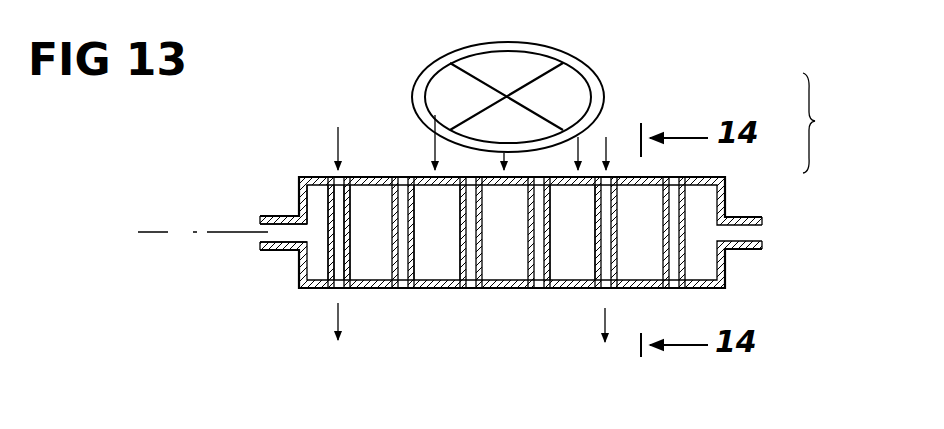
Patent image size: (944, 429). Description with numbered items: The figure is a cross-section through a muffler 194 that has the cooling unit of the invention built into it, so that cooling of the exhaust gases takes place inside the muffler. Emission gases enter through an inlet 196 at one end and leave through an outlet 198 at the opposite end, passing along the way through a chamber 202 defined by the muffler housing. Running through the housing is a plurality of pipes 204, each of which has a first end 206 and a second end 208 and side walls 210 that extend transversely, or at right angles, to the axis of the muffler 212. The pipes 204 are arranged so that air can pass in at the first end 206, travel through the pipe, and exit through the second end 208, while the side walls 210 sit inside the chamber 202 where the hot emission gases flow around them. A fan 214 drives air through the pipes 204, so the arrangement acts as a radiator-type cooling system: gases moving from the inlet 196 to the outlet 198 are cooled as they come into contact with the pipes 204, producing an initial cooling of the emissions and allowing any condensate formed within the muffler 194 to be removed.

The muffler 194 is at (315, 290).
The inlet 196 is at (267, 250).
The outlet 198 is at (753, 250).
The chamber 202 is at (578, 260).
The pipes 204 is at (307, 200).
The first end 206 is at (333, 177).
The second end 208 is at (340, 290).
The side walls 210 is at (417, 255).
The axis of the muffler 212 is at (178, 234).
The fan 214 is at (423, 80).